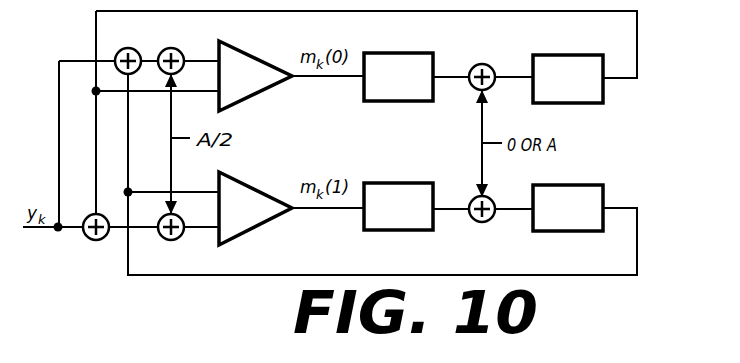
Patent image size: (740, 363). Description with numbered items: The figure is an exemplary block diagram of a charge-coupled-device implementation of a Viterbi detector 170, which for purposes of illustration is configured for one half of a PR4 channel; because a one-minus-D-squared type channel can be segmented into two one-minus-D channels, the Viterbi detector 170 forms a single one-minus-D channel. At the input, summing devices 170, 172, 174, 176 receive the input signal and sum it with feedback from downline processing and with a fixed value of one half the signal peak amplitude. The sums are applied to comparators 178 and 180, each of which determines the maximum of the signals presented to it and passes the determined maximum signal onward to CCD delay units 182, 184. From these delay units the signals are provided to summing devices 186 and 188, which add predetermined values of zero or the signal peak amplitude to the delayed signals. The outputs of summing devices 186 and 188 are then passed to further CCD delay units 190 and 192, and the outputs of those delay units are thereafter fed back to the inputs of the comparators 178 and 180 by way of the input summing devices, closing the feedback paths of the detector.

The Viterbi detector 170 is at (90, 240).
The summing device 172 is at (133, 47).
The summing device 174 is at (168, 240).
The summing device 176 is at (175, 47).
The comparator 178 is at (255, 225).
The comparator 180 is at (242, 49).
The CCD delay unit 182 is at (395, 230).
The CCD delay unit 184 is at (400, 53).
The summing device 186 is at (482, 223).
The summing device 188 is at (487, 56).
The CCD delay unit 190 is at (570, 231).
The CCD delay unit 192 is at (553, 55).